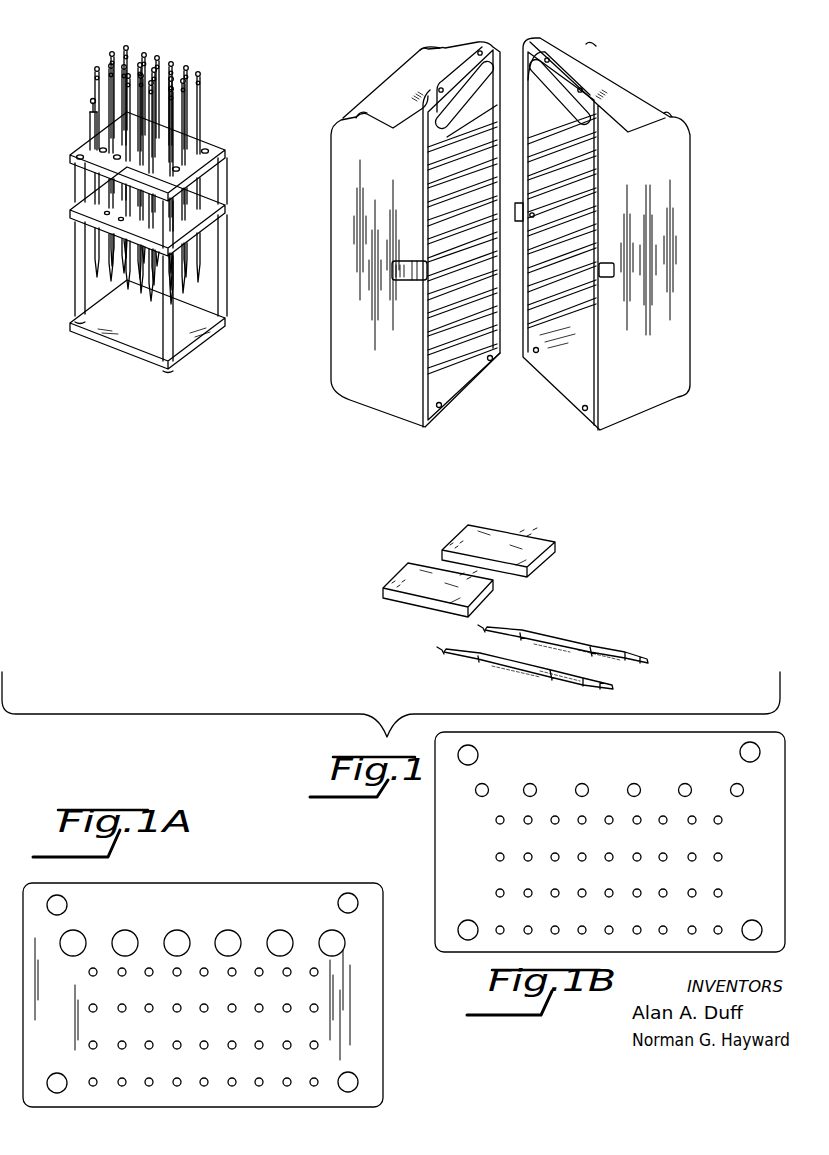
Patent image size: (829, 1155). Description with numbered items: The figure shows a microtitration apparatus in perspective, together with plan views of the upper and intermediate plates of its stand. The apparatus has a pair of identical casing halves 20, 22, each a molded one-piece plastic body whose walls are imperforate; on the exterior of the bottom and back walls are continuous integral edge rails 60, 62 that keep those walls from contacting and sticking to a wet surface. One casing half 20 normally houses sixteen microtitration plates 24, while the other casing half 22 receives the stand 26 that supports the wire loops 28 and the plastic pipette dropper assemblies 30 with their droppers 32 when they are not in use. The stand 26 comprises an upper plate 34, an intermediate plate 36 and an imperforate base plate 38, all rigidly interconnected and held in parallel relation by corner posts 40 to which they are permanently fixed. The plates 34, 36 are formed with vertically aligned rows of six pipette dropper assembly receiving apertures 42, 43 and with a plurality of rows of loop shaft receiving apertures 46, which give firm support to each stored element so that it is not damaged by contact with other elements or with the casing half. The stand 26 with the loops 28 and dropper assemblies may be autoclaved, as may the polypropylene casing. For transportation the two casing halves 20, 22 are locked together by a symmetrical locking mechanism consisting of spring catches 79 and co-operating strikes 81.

In FIG. 1, the casing half 20 is at (347, 221).
In FIG. 1, the casing half 22 is at (680, 274).
In FIG. 1, the microtitration plates 24 is at (500, 546).
In FIG. 1, the stand 26 is at (78, 345).
In FIG. 1, the wire loops 28 is at (196, 120).
In FIG. 1, the pipette dropper assemblies 30 is at (92, 137).
In FIG. 1, the droppers 32 is at (118, 286).
In FIG. 1, the upper plate 34 is at (212, 153).
In FIG. 1A, the upper plate 34 is at (242, 883).
In FIG. 1, the intermediate plate 36 is at (220, 212).
In FIG. 1B, the intermediate plate 36 is at (435, 835).
In FIG. 1, the base plate 38 is at (207, 332).
In FIG. 1, the corner posts 40 is at (87, 268).
In FIG. 1, the pipette dropper assembly receiving apertures 42 is at (118, 158).
In FIG. 1A, the pipette dropper assembly receiving apertures 42 is at (117, 943).
In FIG. 1, the pipette dropper assembly receiving apertures 43 is at (120, 218).
In FIG. 1B, the pipette dropper assembly receiving apertures 43 is at (633, 788).
In FIG. 1A, the loop shaft receiving apertures 46 is at (115, 1027).
In FIG. 1B, the loop shaft receiving apertures 46 is at (580, 856).
In FIG. 1, the edge rail 60 is at (357, 112).
In FIG. 1, the edge rail 62 is at (425, 49).
In FIG. 1, the spring catches 79 is at (519, 206).
In FIG. 1, the strikes 81 is at (607, 262).